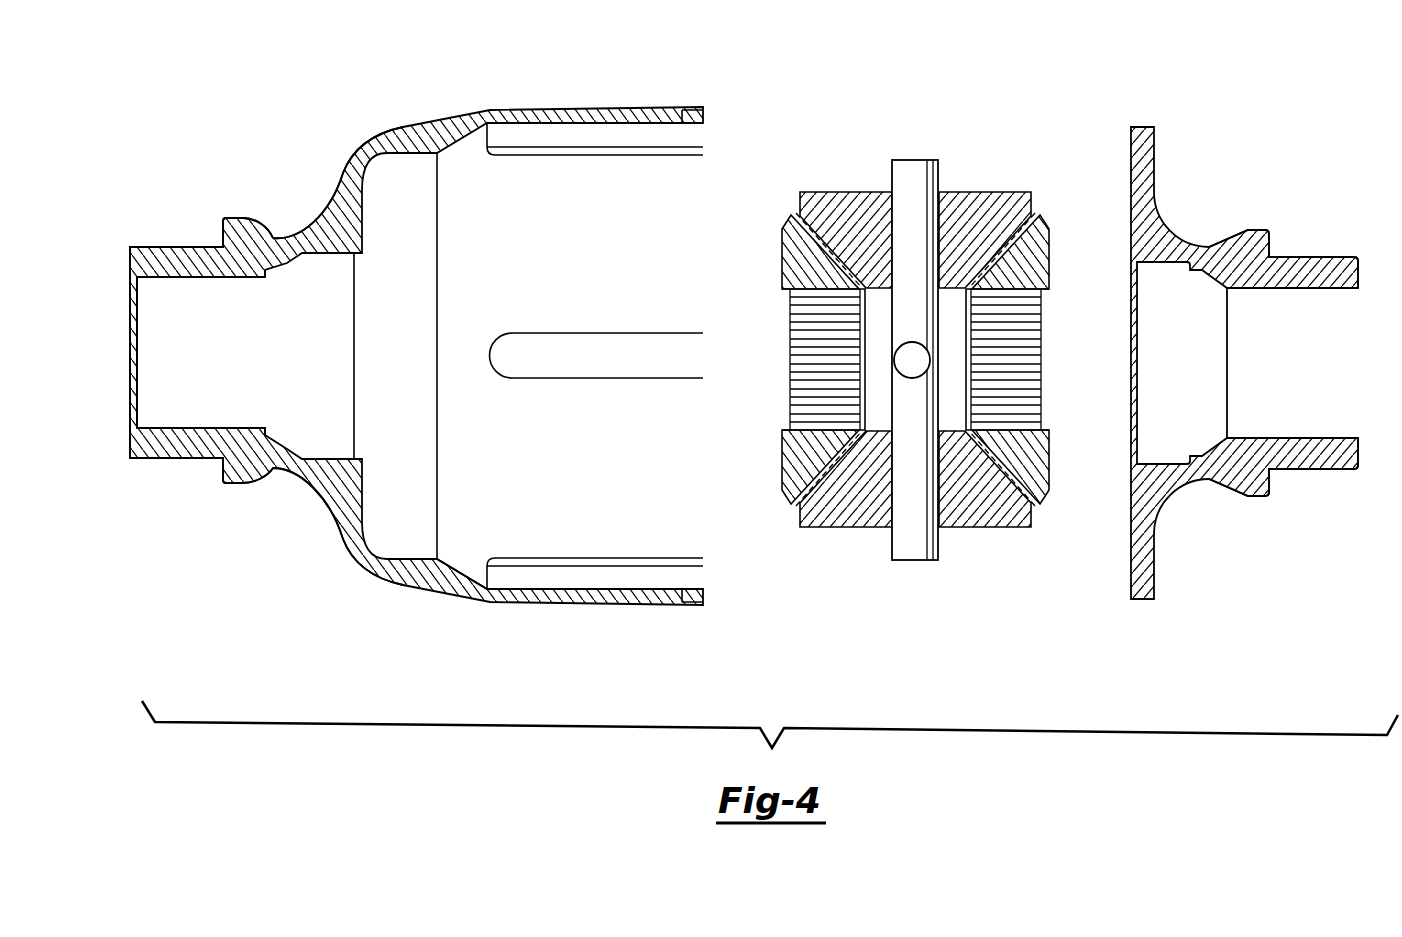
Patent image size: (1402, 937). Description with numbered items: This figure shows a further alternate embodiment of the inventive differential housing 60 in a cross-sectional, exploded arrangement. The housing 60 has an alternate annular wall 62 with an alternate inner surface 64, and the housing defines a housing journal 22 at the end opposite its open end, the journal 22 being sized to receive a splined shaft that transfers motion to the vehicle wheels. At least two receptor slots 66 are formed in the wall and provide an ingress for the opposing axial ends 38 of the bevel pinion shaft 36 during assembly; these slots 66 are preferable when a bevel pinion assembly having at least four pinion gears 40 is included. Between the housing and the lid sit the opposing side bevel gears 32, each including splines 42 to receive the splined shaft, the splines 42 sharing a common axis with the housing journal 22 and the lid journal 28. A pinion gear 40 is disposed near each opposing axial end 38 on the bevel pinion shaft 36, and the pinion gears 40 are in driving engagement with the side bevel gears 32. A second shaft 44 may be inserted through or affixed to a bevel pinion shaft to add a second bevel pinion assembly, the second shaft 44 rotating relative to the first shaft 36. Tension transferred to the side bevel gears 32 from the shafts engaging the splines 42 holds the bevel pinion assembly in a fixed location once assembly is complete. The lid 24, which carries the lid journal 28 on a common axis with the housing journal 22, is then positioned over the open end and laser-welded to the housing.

The housing journal 22 is at (170, 247).
The lid 24 is at (1166, 227).
The lid journal 28 is at (1325, 257).
The side bevel gear 32 is at (1033, 266).
The bevel pinion shaft 36 is at (902, 236).
The opposing axial ends 38 is at (910, 160).
The pinion gear 40 is at (980, 203).
The splines 42 is at (808, 372).
The second shaft 44 is at (913, 345).
The differential housing 60 is at (405, 127).
The annular wall 62 is at (468, 132).
The inner surface 64 is at (456, 556).
The receptor slots 66 is at (627, 138).